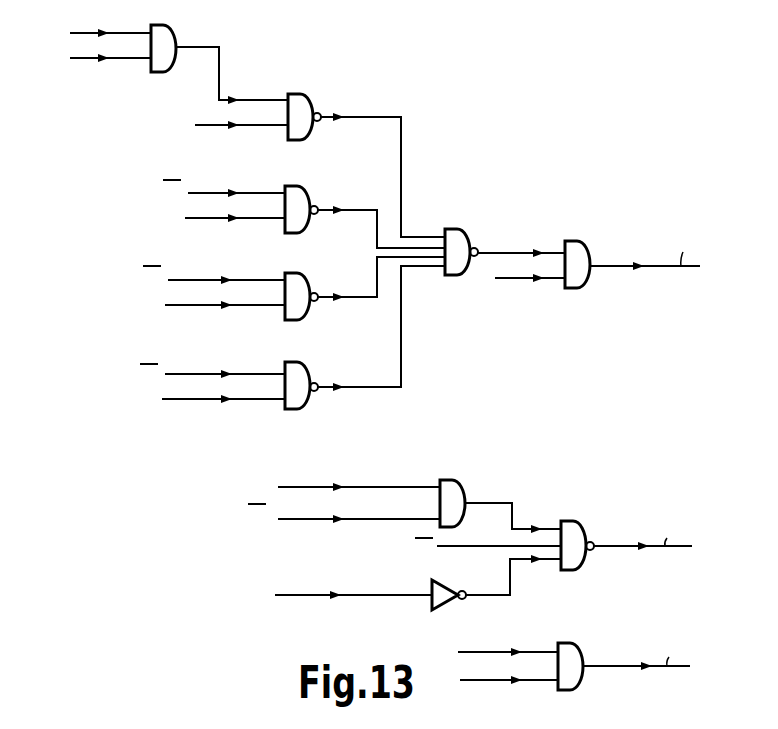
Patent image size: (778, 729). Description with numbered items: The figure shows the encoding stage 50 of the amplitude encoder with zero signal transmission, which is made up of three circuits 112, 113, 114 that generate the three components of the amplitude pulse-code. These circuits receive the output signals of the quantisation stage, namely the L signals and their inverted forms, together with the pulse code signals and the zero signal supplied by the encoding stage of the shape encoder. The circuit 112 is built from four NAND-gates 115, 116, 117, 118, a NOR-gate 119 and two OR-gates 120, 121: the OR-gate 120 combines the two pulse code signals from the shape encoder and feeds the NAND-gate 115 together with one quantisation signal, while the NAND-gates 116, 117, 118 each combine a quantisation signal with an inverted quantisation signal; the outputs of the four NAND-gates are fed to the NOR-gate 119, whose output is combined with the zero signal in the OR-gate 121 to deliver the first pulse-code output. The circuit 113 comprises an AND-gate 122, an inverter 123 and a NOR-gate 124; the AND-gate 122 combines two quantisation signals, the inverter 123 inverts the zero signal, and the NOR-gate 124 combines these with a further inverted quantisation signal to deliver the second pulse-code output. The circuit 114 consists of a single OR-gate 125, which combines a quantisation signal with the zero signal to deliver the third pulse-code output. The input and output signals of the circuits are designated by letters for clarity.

The encoding stage 50 is at (209, 481).
The circuit 112 is at (641, 196).
The circuit 113 is at (638, 511).
The circuit 114 is at (635, 634).
The NAND-gate 115 is at (312, 113).
The NAND-gate 116 is at (308, 195).
The NAND-gate 117 is at (310, 287).
The NAND-gate 118 is at (312, 378).
The NOR-gate 119 is at (465, 241).
The OR-gate 120 is at (176, 36).
The OR-gate 121 is at (582, 249).
The AND-gate 122 is at (462, 497).
The inverter 123 is at (430, 588).
The NOR-gate 124 is at (584, 563).
The OR-gate 125 is at (578, 683).